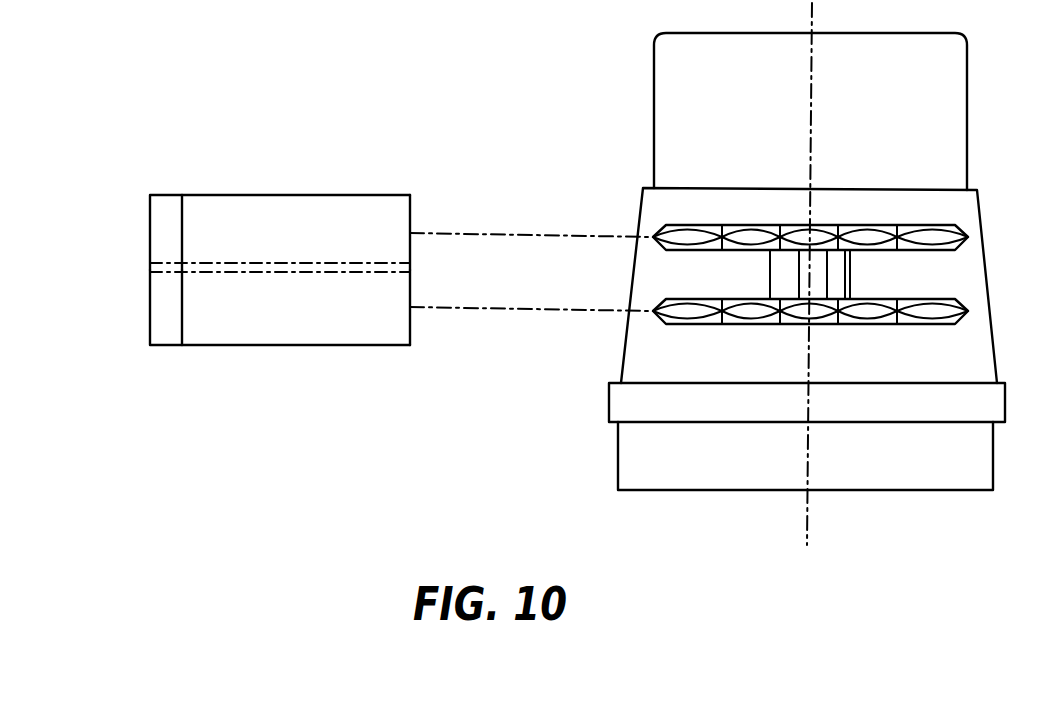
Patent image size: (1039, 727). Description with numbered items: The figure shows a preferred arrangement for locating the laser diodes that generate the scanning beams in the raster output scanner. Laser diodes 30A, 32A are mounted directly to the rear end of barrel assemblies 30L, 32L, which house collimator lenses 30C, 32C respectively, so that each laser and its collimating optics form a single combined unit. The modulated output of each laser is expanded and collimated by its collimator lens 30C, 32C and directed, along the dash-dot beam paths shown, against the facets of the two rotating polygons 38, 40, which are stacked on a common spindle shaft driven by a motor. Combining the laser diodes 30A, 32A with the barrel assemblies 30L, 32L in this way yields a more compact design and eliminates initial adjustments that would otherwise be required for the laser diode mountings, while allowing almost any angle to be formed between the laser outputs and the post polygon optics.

The laser diode 30A is at (165, 210).
The collimator lens 30C is at (263, 218).
The barrel assembly 30L is at (348, 195).
The laser diode 32A is at (165, 328).
The collimator lens 32C is at (263, 318).
The barrel assembly 32L is at (348, 345).
The polygon 38 is at (748, 224).
The polygon 40 is at (748, 325).